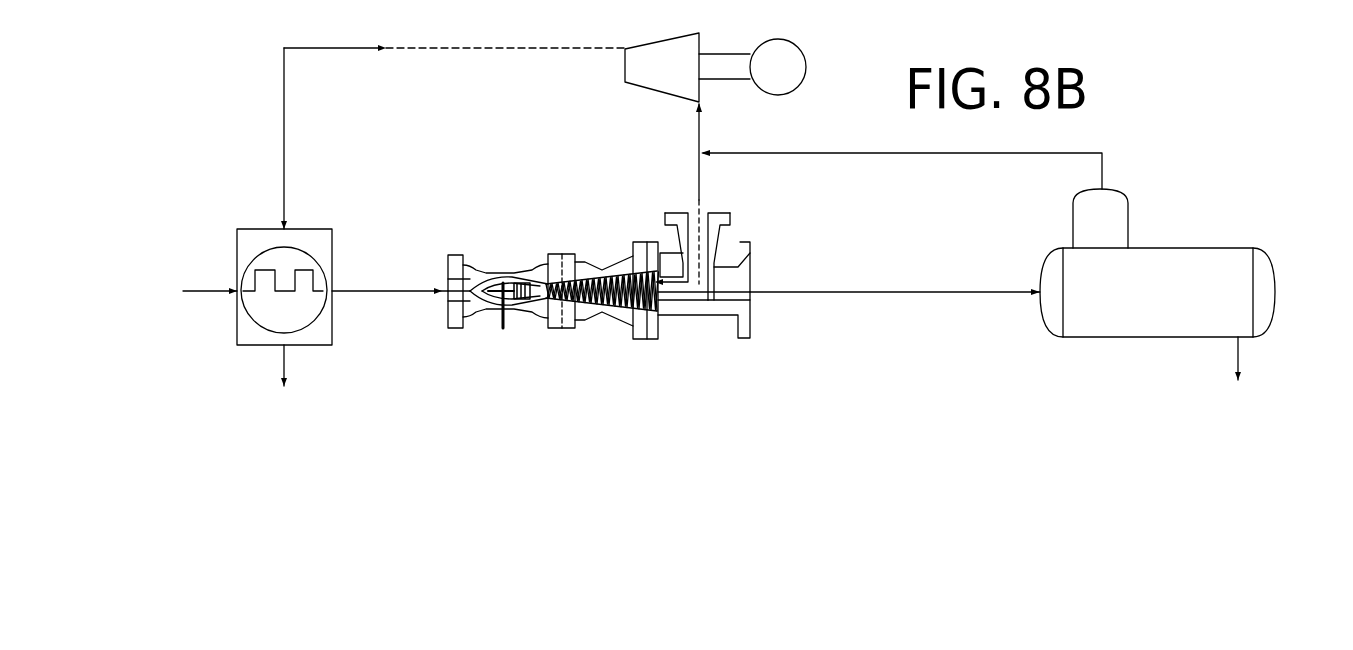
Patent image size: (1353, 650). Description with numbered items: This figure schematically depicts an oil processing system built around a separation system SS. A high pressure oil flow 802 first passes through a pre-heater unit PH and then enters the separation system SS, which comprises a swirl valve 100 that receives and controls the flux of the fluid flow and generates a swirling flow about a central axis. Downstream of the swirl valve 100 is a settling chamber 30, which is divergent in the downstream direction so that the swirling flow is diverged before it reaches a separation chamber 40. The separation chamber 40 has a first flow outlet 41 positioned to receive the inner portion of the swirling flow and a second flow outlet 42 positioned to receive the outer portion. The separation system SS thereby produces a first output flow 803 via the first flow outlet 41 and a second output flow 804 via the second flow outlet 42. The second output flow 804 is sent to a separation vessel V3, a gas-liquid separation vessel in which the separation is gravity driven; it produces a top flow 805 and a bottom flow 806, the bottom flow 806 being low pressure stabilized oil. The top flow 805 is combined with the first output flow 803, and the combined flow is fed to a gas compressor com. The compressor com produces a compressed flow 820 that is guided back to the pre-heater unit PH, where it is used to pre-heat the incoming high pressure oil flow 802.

The pre-heater unit PH is at (325, 247).
The high pressure oil flow 802 is at (395, 291).
The compressed flow 820 is at (505, 50).
The gas compressor com is at (647, 87).
The first output flow 803 is at (700, 189).
The top flow 805 is at (1103, 172).
The second output flow 804 is at (877, 292).
The separation vessel V3 is at (1207, 265).
The bottom flow 806 is at (1238, 357).
The swirl valve 100 is at (630, 262).
The separation system SS is at (580, 243).
The settling chamber 30 is at (608, 258).
The separation chamber 40 is at (651, 252).
The first flow outlet 41 is at (725, 215).
The second flow outlet 42 is at (753, 252).